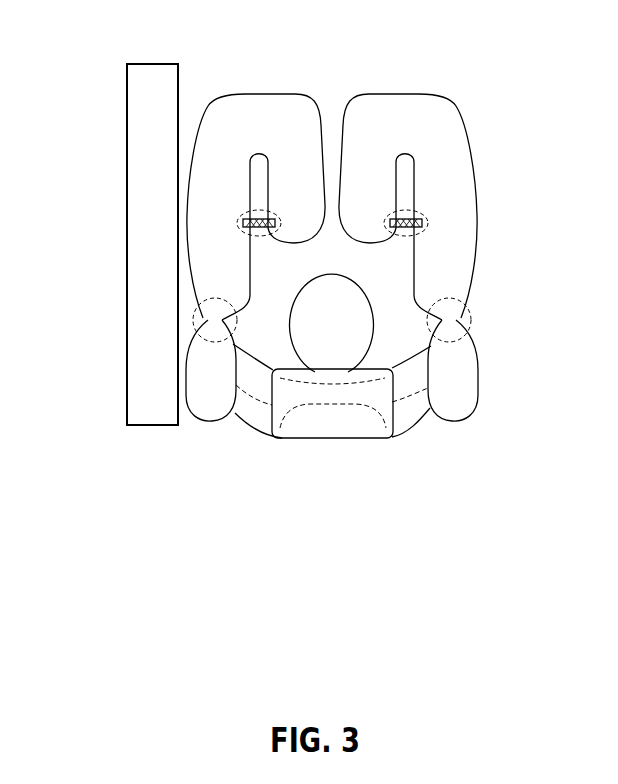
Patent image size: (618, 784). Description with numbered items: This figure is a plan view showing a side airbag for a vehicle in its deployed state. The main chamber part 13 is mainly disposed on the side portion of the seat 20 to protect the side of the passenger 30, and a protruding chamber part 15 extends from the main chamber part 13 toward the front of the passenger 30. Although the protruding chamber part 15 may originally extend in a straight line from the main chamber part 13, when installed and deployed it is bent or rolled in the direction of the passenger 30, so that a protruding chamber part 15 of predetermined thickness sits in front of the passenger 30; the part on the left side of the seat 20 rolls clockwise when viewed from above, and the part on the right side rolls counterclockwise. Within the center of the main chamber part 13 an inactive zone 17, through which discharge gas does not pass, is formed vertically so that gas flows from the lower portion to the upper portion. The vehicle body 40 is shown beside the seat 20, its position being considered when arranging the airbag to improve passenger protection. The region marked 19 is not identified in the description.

The main chamber part 13 is at (203, 421).
The protruding chamber part 15 is at (260, 99).
The inactive zone 17 is at (205, 318).
The fastening portion 19 is at (240, 222).
The seat 20 is at (414, 405).
The passenger 30 is at (332, 352).
The vehicle body 40 is at (146, 378).